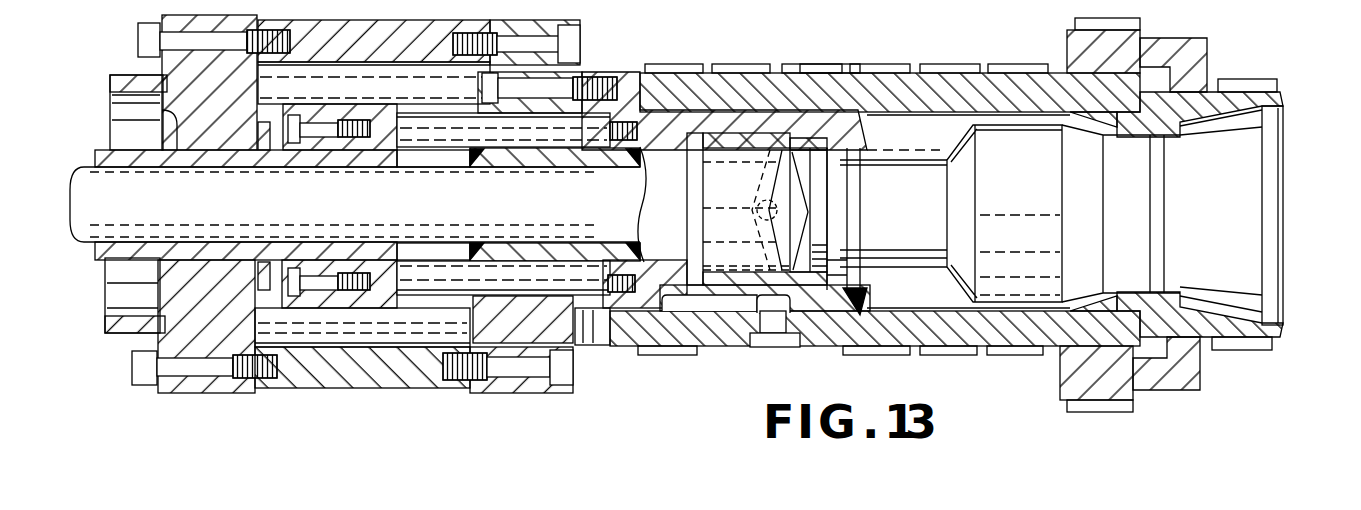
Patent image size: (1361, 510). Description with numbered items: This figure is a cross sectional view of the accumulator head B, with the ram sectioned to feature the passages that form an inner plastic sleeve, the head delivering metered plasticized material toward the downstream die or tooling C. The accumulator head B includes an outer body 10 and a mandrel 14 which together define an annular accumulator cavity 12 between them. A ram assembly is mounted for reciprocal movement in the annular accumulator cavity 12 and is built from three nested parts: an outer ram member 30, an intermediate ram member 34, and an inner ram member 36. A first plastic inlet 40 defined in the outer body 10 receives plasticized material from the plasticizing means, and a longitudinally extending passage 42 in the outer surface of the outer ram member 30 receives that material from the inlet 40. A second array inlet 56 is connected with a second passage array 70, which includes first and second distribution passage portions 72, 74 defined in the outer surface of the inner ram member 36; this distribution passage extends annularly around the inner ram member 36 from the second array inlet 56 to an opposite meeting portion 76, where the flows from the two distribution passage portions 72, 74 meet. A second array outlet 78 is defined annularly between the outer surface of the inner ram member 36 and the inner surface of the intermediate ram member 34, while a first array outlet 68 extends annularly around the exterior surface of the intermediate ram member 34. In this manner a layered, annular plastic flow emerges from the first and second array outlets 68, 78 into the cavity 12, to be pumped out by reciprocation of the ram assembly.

The outer body 10 is at (1011, 98).
The annular accumulator cavity 12 is at (927, 150).
The mandrel 14 is at (1025, 197).
The outer ram member 30 is at (674, 118).
The intermediate ram member 34 is at (738, 140).
The inner ram member 36 is at (752, 174).
The first plastic inlet 40 is at (777, 323).
The longitudinally extending passage 42 is at (695, 303).
The second array inlet 56 is at (760, 209).
The first array outlet 68 is at (827, 290).
The second passage array 70 is at (756, 247).
The first distribution passage portion 72 is at (790, 235).
The second distribution passage portion 74 is at (782, 157).
The opposite meeting portion 76 is at (790, 205).
The second array outlet 78 is at (822, 277).
The accumulator head B is at (836, 60).
The downstream die or tooling C is at (1304, 106).